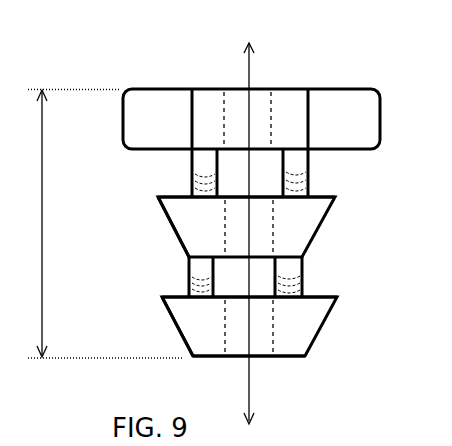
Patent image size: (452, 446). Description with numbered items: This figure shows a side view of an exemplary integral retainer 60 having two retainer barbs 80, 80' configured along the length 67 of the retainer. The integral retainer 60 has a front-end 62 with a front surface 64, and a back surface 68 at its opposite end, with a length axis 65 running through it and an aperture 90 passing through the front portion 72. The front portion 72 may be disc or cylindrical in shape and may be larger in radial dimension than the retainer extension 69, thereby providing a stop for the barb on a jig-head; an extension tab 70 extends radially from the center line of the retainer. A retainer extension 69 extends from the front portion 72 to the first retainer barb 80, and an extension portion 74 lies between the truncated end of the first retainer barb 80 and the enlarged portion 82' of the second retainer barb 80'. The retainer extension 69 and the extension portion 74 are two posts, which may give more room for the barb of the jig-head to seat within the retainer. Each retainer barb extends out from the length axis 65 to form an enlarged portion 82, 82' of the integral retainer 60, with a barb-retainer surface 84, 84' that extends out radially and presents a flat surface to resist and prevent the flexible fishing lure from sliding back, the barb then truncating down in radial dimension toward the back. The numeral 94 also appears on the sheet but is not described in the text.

The integral retainer 60 is at (127, 80).
The front-end 62 is at (158, 95).
The front surface 64 is at (324, 82).
The length axis 65 is at (253, 412).
The length 67 is at (105, 224).
The back surface 68 is at (289, 364).
The retainer extension 69 is at (288, 170).
The extension tab 70 is at (359, 128).
The front portion 72 is at (280, 111).
The extension portion 74 is at (303, 268).
The first retainer barb 80 is at (268, 227).
The second retainer barb 80' is at (274, 326).
The enlarged portion 82 is at (149, 227).
The enlarged portion of second retainer barb 82' is at (156, 326).
The barb-retainer surface 84 is at (221, 179).
The barb-retainer surface of second retainer barb 84' is at (227, 274).
The aperture 90 is at (278, 223).
The reference 94 is at (442, 9).